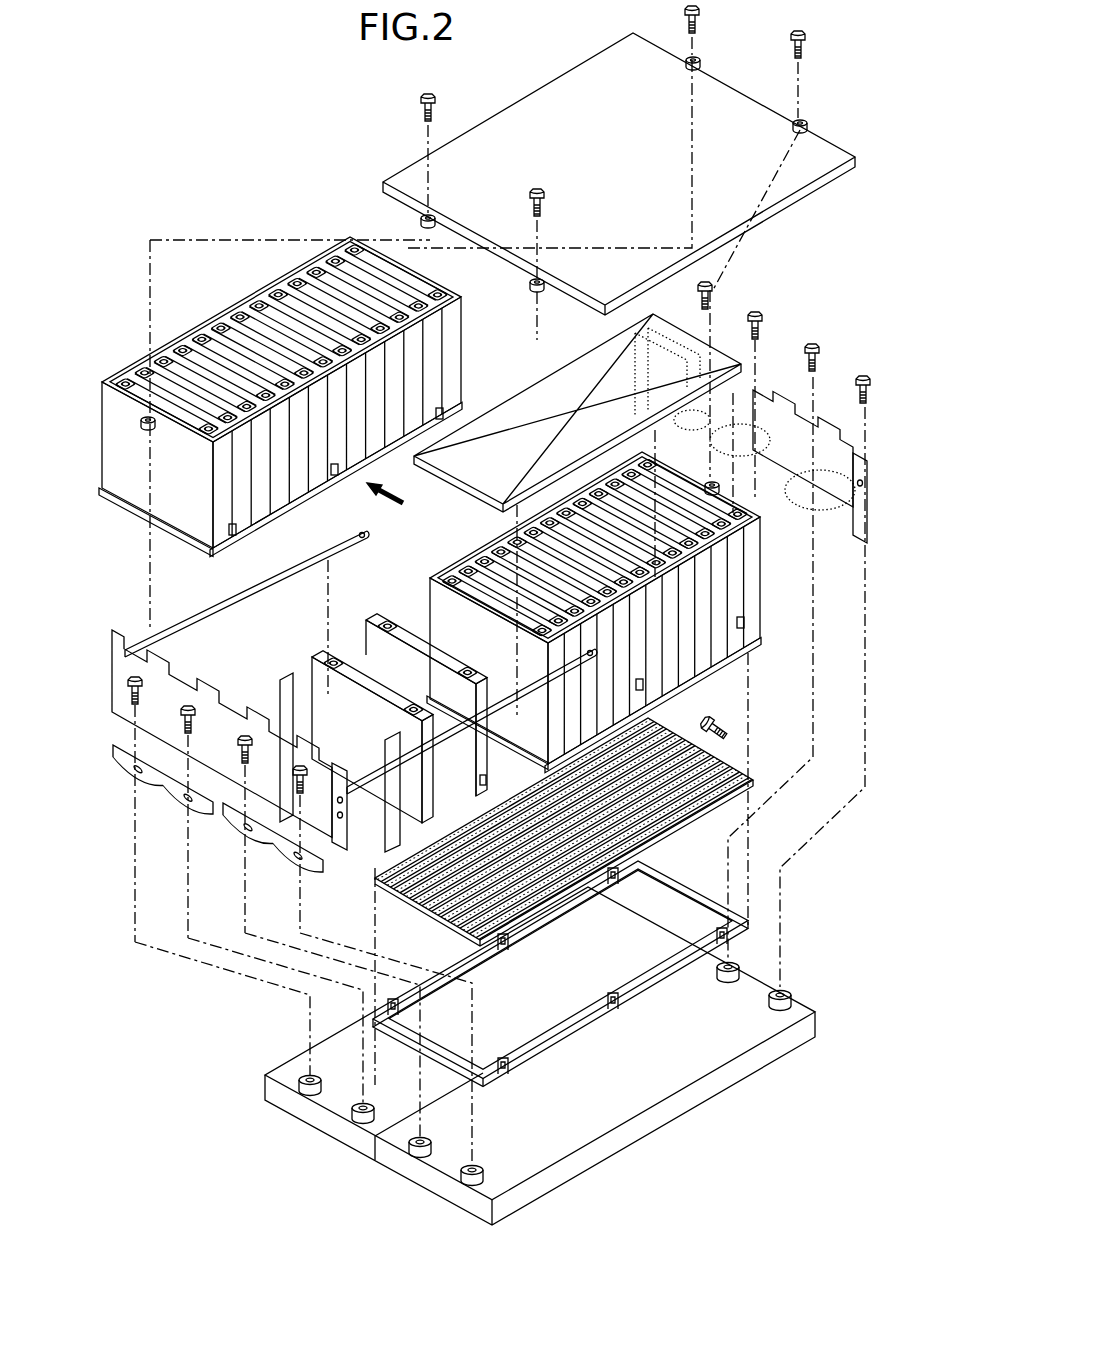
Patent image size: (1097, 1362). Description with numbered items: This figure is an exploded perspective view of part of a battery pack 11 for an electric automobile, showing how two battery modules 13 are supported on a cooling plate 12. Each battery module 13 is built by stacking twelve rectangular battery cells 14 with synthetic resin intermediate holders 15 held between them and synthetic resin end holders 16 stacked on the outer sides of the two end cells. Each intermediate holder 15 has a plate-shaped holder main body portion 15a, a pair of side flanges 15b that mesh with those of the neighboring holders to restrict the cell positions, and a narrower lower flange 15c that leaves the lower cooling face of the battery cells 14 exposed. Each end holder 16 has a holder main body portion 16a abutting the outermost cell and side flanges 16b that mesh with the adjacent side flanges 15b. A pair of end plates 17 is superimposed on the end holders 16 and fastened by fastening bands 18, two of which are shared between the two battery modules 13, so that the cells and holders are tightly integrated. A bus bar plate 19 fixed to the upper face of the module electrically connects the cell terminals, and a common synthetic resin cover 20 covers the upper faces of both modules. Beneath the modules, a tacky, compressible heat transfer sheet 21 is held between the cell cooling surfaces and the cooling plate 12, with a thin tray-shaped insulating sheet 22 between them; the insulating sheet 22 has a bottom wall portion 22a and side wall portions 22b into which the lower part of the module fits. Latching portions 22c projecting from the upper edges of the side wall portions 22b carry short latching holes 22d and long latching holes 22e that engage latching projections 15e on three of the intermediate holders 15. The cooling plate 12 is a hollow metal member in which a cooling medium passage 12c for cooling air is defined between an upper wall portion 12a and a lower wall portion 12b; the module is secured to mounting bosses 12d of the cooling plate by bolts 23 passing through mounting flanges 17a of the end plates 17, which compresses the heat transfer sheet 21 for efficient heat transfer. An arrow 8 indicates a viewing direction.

The viewing direction arrow 8 is at (397, 503).
The battery pack 11 is at (491, 615).
The cooling plate 12 is at (537, 1056).
The upper wall portion 12a is at (585, 1150).
The lower wall portion 12b is at (315, 1130).
The cooling medium passage 12c is at (370, 1155).
The mounting boss 12d is at (783, 990).
The battery module 13 is at (450, 490).
The battery cell 14 is at (342, 255).
The intermediate holder 15 is at (283, 507).
The holder main body portion 15a is at (404, 652).
The side flange 15b is at (366, 620).
The lower flange 15c is at (445, 885).
The latching projection 15e is at (305, 548).
The end holder 16 is at (491, 602).
The holder main body portion 16a is at (291, 712).
The side flange 16b is at (290, 680).
The end plate 17 is at (758, 378).
The mounting flange 17a is at (848, 450).
The fastening band 18 is at (210, 635).
The bus bar plate 19 is at (584, 370).
The cover 20 is at (546, 100).
The heat transfer sheet 21 is at (602, 832).
The insulating sheet 22 is at (458, 723).
The bottom wall portion 22a is at (548, 1058).
The side wall portion 22b is at (750, 928).
The latching portion 22c is at (442, 706).
The latching hole 22d is at (508, 950).
The latching hole 22e is at (437, 410).
The bolt 23 is at (757, 320).